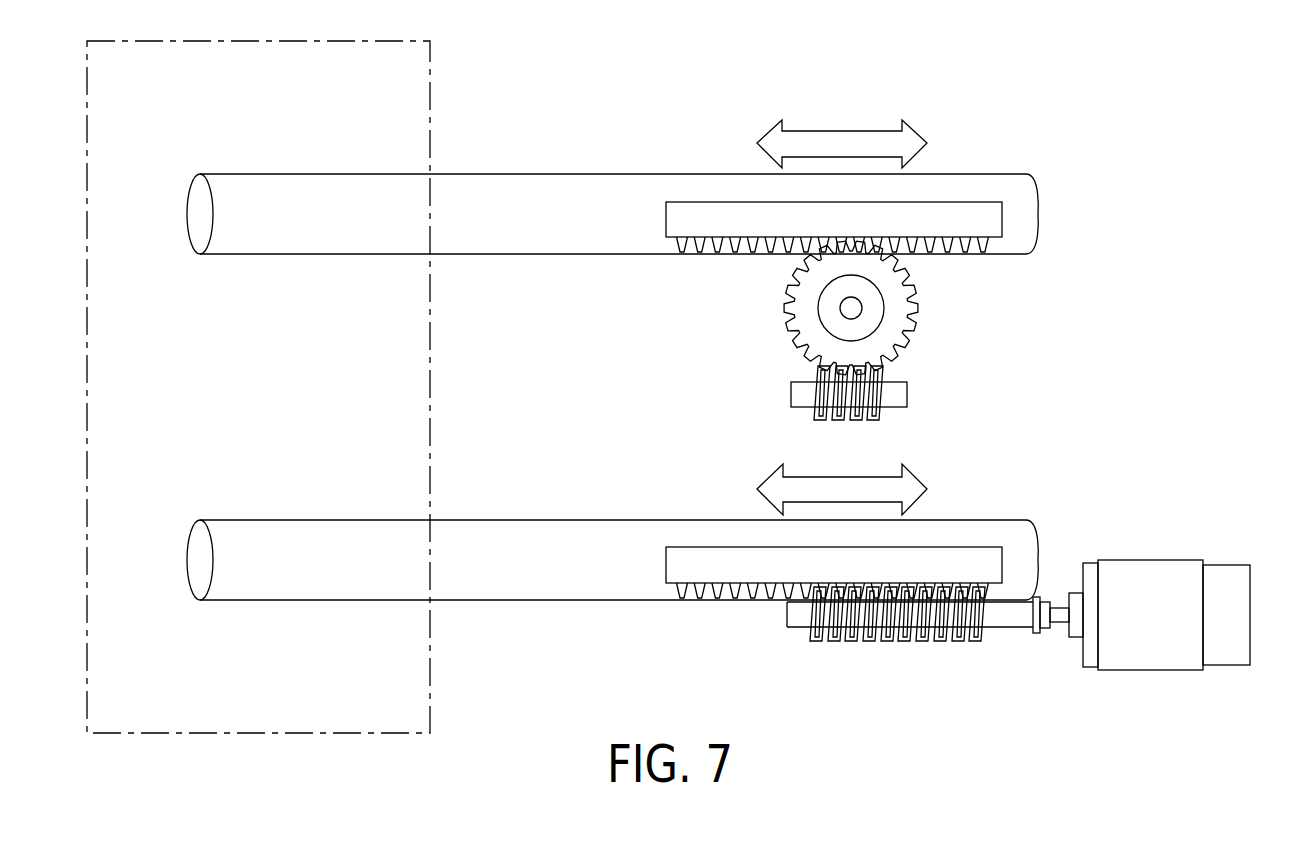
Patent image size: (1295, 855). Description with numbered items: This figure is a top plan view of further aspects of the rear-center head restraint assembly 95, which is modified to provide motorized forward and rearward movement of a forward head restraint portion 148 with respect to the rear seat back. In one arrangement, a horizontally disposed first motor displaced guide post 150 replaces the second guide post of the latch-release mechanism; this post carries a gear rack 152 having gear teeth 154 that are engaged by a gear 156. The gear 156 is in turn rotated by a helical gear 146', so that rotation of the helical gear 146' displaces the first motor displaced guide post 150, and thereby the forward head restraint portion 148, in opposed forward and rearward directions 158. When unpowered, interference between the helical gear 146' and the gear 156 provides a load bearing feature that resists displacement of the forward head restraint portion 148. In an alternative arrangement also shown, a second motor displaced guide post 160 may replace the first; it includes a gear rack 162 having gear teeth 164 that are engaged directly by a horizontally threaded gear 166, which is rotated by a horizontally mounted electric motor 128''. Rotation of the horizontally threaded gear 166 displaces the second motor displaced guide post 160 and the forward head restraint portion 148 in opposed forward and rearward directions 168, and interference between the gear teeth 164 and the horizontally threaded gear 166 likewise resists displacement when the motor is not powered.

The head restraint assembly 95 is at (1116, 130).
The horizontally mounted electric motor 128'' is at (1141, 596).
The helical gear 146' is at (836, 408).
The forward head restraint portion 148 is at (430, 106).
The first motor displaced guide post 150 is at (305, 190).
The gear rack 152 is at (975, 217).
The gear teeth 154 is at (966, 253).
The gear 156 is at (790, 302).
The opposed forward and rearward directions 158 is at (840, 130).
The second motor displaced guide post 160 is at (313, 534).
The gear rack 162 is at (980, 560).
The gear teeth 164 is at (682, 598).
The horizontally threaded gear 166 is at (885, 636).
The opposed forward and rearward directions 168 is at (915, 480).